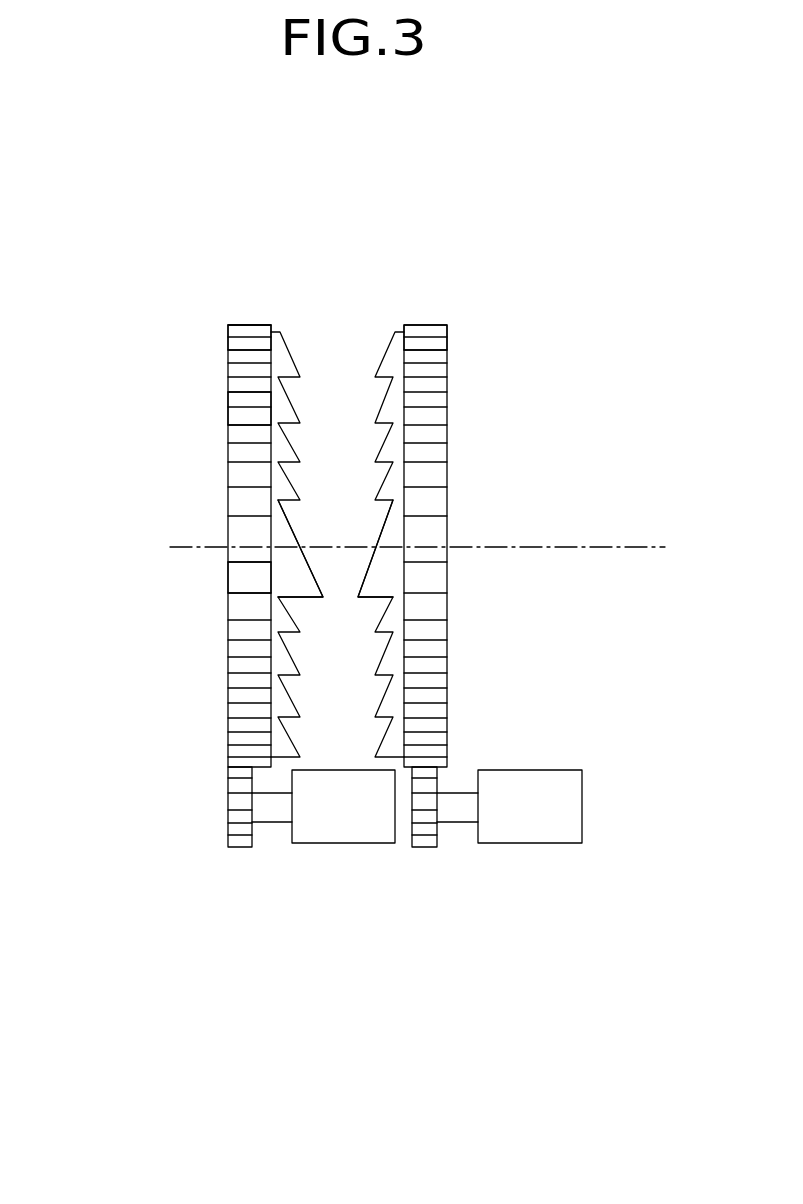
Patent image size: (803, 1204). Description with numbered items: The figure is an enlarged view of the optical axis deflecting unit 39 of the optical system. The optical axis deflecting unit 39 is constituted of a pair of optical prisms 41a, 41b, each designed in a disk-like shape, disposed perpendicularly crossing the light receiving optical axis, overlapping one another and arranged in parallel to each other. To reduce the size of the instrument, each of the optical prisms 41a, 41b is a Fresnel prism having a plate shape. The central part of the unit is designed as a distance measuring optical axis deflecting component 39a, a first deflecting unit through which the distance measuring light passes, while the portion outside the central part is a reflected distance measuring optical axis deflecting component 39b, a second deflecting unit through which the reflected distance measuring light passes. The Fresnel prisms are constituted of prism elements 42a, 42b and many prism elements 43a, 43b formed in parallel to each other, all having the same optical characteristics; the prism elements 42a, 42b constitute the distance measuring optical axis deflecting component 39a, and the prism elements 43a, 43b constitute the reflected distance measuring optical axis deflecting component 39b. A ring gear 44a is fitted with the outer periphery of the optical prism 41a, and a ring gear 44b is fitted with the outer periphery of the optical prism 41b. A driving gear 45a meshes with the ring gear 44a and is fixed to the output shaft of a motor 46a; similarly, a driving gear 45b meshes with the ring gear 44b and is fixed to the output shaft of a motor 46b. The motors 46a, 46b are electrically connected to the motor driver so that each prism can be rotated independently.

The optical axis deflecting unit 39 is at (500, 337).
The distance measuring optical axis deflecting component 39a is at (228, 562).
The reflected distance measuring optical axis deflecting component 39b is at (228, 405).
The optical prism 41a is at (228, 703).
The optical prism 41b is at (447, 675).
The prism element 42a is at (292, 535).
The prism element 42b is at (368, 568).
The prism elements 43a is at (290, 355).
The prism elements 43b is at (388, 360).
The ring gear 44a is at (248, 325).
The ring gear 44b is at (423, 325).
The driving gear 45a is at (230, 848).
The driving gear 45b is at (423, 848).
The motor 46a is at (315, 845).
The motor 46b is at (548, 845).